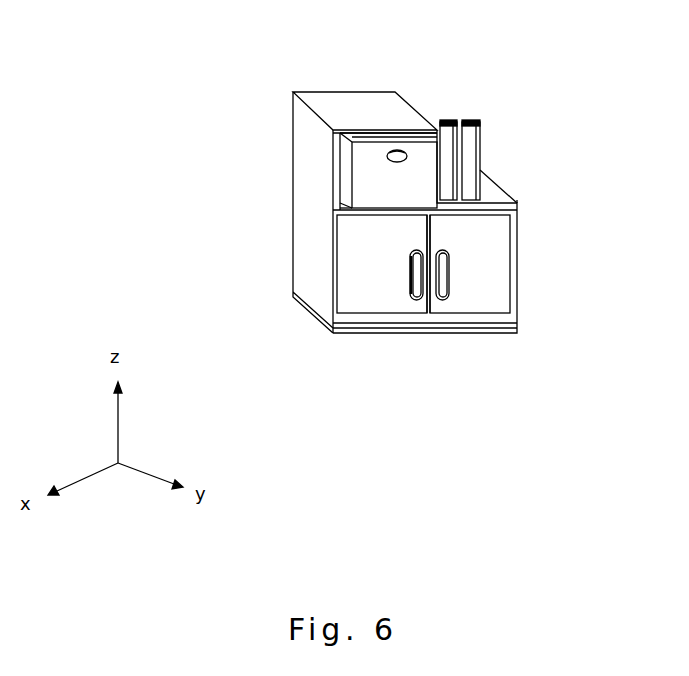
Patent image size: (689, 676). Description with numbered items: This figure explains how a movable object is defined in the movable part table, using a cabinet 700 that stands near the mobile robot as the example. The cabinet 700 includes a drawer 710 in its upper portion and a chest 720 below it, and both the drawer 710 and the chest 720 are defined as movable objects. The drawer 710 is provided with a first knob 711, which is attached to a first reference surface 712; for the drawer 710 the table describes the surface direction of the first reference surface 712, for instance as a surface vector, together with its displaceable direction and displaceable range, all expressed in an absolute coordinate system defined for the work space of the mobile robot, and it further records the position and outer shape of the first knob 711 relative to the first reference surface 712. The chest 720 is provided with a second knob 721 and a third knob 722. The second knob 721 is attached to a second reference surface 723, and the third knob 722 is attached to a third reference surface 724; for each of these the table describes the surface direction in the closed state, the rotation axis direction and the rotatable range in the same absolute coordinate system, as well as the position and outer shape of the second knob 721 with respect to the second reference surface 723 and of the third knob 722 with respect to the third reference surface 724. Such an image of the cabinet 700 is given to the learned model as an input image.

The cabinet 700 is at (257, 36).
The drawer 710 is at (343, 147).
The first knob 711 is at (400, 152).
The first reference surface 712 is at (370, 180).
The chest 720 is at (495, 235).
The second knob 721 is at (447, 297).
The third knob 722 is at (421, 298).
The second reference surface 723 is at (493, 307).
The third reference surface 724 is at (366, 306).